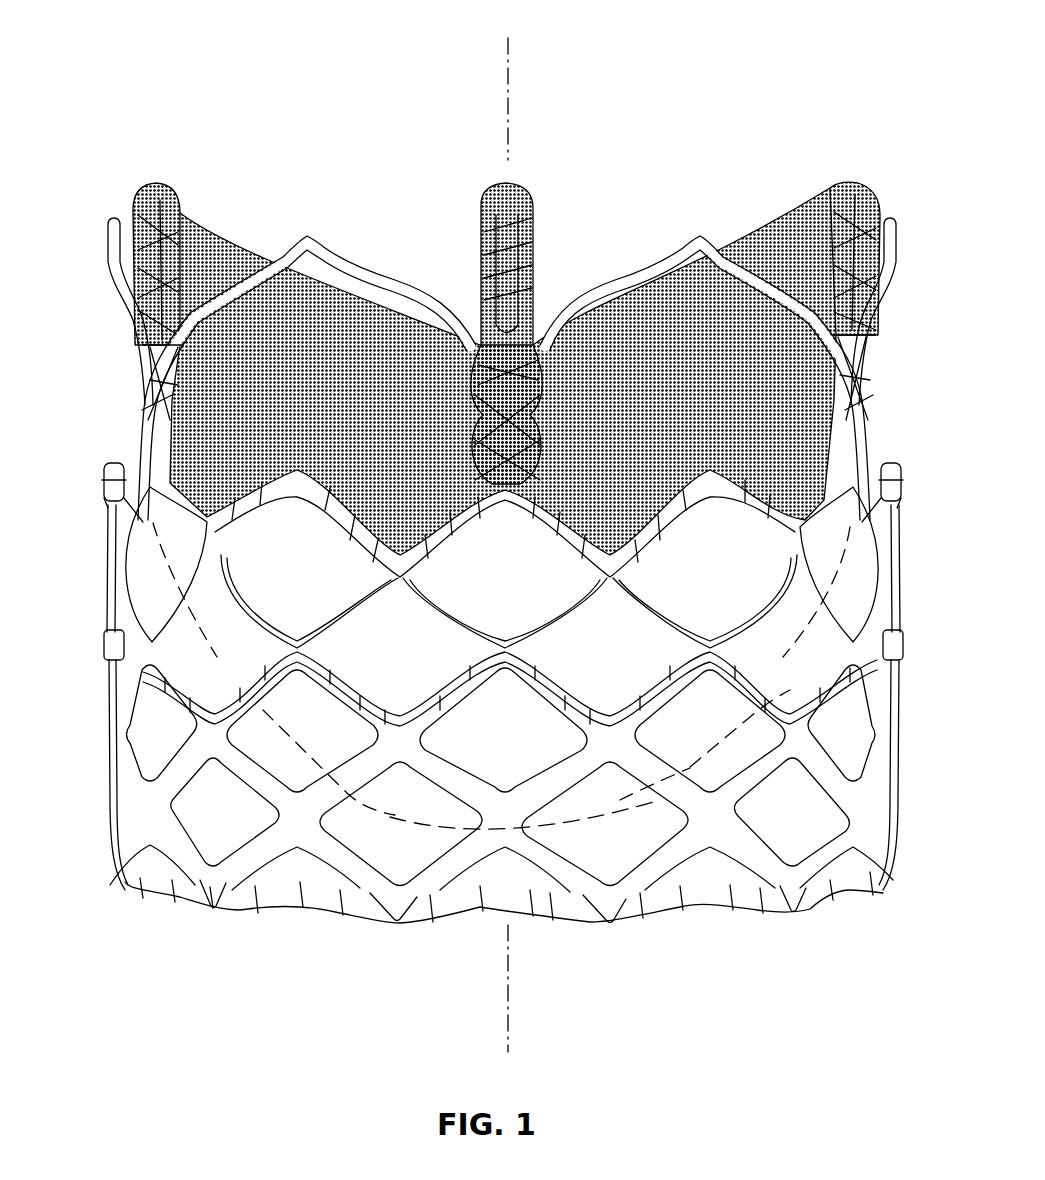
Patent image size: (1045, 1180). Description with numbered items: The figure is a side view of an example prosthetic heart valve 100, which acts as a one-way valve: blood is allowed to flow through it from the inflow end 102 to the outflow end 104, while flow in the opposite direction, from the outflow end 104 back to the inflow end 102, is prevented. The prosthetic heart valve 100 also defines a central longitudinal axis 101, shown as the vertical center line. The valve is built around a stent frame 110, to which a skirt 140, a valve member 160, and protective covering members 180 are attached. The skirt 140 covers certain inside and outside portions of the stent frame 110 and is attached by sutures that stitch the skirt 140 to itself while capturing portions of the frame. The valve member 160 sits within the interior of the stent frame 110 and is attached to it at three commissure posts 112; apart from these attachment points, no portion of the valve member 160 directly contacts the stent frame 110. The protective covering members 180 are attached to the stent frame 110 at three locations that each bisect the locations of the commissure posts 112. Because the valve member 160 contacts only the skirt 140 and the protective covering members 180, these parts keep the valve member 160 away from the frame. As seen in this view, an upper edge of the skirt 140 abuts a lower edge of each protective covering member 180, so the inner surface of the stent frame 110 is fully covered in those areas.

The prosthetic heart valve 100 is at (170, 68).
The central longitudinal axis 101 is at (508, 1040).
The inflow end 102 is at (160, 905).
The outflow end 104 is at (117, 195).
The stent frame 110 is at (372, 240).
The commissure posts 112 is at (150, 375).
The skirt 140 is at (395, 826).
The valve member 160 is at (280, 355).
The protective covering members 180 is at (545, 355).